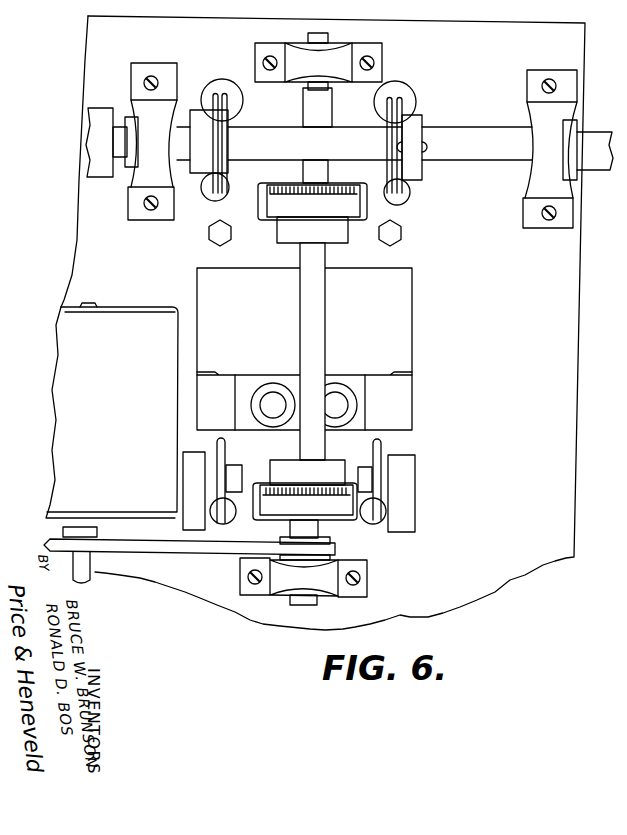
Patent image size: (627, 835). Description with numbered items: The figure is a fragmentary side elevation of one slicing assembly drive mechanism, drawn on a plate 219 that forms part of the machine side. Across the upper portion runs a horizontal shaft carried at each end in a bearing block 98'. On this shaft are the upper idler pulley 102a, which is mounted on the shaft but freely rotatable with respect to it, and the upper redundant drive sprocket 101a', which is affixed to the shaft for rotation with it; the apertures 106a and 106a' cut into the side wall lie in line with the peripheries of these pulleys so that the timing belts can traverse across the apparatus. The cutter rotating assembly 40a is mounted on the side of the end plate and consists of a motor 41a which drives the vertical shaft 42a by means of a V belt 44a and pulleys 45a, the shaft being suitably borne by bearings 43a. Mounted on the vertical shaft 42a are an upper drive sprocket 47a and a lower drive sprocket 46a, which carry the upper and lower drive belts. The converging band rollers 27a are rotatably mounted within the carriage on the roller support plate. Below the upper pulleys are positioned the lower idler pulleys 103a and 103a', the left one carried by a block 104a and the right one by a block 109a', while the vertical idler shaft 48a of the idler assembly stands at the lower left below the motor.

The mounting plate 219 is at (543, 527).
The bearing block 98' is at (335, 145).
The upper idler pulley 102a is at (213, 95).
The aperture 106a is at (247, 100).
The aperture 106a' is at (418, 85).
The upper redundant drive sprocket 101a' is at (431, 144).
The bearing 43a is at (330, 70).
The upper drive sprocket 47a is at (318, 203).
The vertical shaft 42a is at (318, 312).
The cutter rotating assembly 40a is at (425, 352).
The converging band roller 27a is at (273, 397).
The motor 41a is at (132, 434).
The block 104a is at (192, 470).
The lower idler pulley 103a is at (245, 479).
The lower idler pulley 103a' is at (415, 471).
The block 109a' is at (436, 493).
The lower drive sprocket 46a is at (340, 505).
The pulley 45a is at (340, 552).
The V belt 44a is at (214, 558).
The vertical idler shaft 48a is at (105, 553).